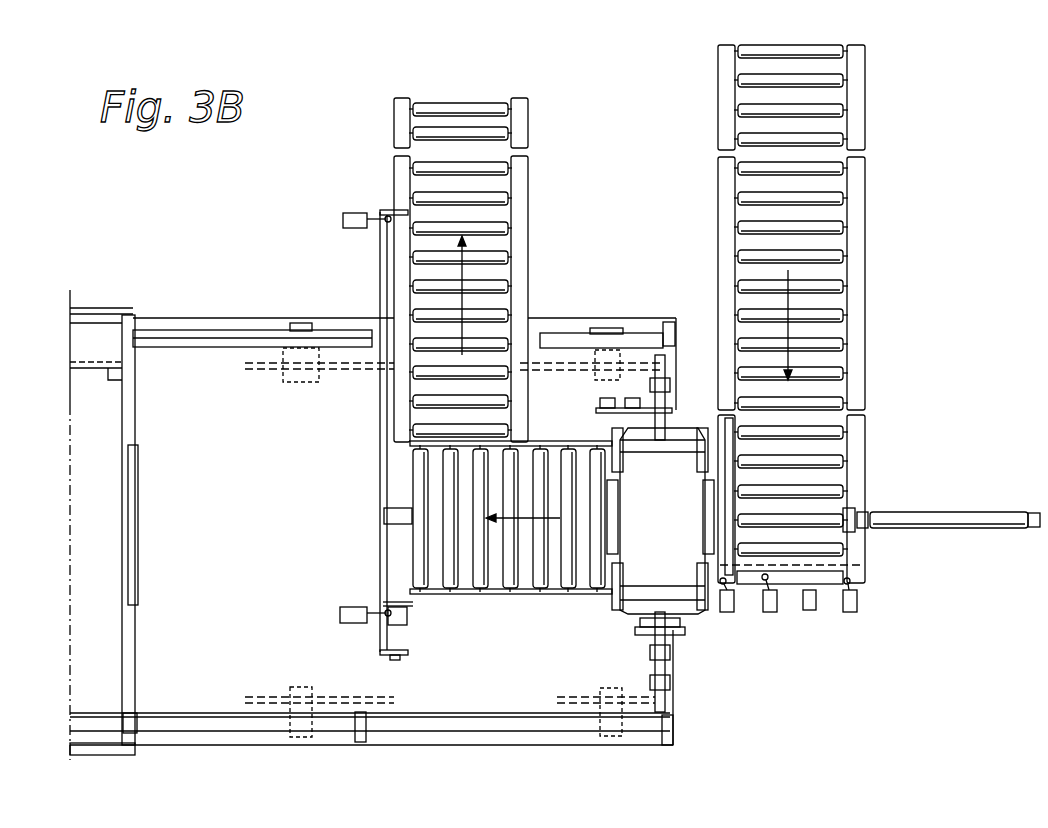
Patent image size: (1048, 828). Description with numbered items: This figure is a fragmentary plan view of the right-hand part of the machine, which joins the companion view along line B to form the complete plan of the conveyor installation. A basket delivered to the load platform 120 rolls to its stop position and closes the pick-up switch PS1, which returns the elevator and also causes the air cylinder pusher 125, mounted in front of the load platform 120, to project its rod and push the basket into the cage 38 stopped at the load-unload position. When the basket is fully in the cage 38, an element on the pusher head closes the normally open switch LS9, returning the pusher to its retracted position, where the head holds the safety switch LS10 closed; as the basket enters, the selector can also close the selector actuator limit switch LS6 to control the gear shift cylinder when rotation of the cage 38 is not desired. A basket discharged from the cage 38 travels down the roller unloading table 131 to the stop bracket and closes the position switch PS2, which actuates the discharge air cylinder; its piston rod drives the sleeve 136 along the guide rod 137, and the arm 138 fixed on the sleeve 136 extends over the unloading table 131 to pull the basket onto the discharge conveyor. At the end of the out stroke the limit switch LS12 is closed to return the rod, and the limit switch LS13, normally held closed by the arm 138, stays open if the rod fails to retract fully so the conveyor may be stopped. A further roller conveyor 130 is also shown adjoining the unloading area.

The line B is at (70, 405).
The cage 38 is at (632, 572).
The load platform 120 is at (838, 462).
The air cylinder pusher 125 is at (970, 512).
The roller conveyor 130 is at (493, 310).
The roller unloading table 131 is at (538, 592).
The sleeve 136 is at (392, 569).
The guide rod 137 is at (390, 410).
The arm 138 is at (416, 606).
The limit switch LS12 is at (354, 207).
The limit switch LS13 is at (345, 630).
The limit switch LS9 is at (725, 612).
The selector actuator limit switch LS6 is at (769, 612).
The limit switch LS10 is at (850, 612).
The pick-up switch PS1 is at (810, 611).
The position switch PS2 is at (384, 510).